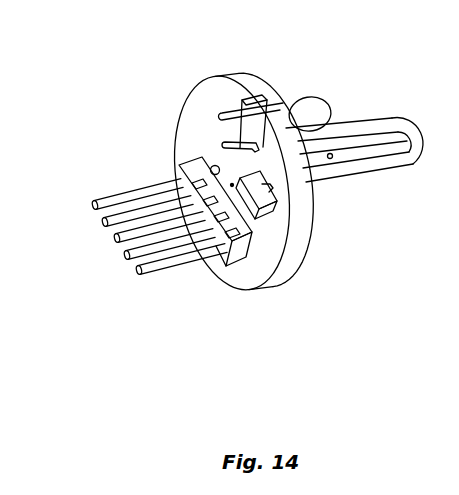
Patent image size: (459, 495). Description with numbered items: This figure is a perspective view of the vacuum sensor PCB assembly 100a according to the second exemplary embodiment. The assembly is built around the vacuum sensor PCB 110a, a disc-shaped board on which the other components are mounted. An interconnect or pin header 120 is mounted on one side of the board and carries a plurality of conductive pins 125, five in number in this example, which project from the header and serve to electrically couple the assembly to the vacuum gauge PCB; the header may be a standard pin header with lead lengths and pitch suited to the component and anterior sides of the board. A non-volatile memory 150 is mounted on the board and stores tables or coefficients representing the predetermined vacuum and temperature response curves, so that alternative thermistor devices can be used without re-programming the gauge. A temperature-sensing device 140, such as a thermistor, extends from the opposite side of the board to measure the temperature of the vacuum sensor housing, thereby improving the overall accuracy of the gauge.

The vacuum sensor PCB assembly 100a is at (221, 207).
The vacuum sensor PCB 110a is at (198, 164).
The conductive pins 125 is at (122, 201).
The interconnect or pin header 120 is at (189, 257).
The non-volatile memory 150 is at (312, 225).
The temperature-sensing device 140 is at (355, 109).